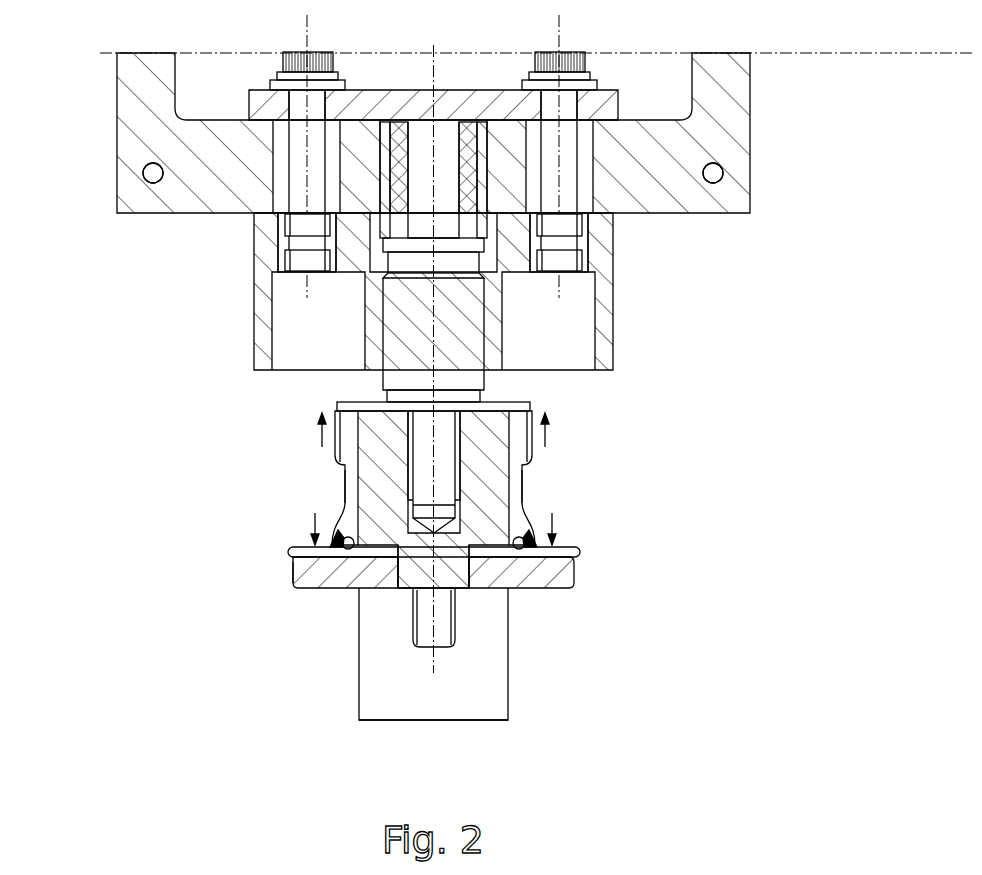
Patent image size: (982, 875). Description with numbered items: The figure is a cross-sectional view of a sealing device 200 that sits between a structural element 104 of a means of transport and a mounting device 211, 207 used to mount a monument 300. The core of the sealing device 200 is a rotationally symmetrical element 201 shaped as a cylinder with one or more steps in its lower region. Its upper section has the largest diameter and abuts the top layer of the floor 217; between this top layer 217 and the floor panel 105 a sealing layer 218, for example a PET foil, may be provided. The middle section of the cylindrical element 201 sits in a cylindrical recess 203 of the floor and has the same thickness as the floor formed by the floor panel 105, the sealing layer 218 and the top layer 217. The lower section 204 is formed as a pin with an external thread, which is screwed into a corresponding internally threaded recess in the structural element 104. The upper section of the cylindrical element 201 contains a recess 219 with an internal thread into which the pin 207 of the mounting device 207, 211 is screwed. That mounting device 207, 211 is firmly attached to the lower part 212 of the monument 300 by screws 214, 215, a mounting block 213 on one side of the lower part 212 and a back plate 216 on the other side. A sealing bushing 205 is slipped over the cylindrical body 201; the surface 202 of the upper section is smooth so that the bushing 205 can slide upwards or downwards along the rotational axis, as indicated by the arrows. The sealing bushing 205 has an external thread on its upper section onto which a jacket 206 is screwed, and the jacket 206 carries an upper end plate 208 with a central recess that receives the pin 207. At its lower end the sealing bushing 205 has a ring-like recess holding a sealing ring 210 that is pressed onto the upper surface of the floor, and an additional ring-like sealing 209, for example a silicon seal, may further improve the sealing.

The monument 300 is at (770, 130).
The lower part of the monument 212 is at (132, 195).
The mounting block 213 is at (253, 258).
The screw 214 is at (335, 77).
The screw 215 is at (584, 77).
The back plate 216 is at (460, 97).
The mounting device 211 is at (410, 317).
The upper end plate 208 is at (514, 403).
The pin of the mounting device 207 is at (434, 463).
The jacket 206 is at (336, 405).
The sealing bushing 205 is at (348, 440).
The sealing device 200 is at (272, 473).
The surface of the upper section of the cylindrical body 202 is at (355, 488).
The ring-like sealing 209 is at (533, 540).
The sealing ring 210 is at (542, 548).
The top layer of the floor 217 is at (288, 547).
The sealing layer 218 is at (297, 577).
The floor panel 105 is at (348, 580).
The recess with internal thread 219 is at (472, 562).
The cylindrical recess of the floor 203 is at (462, 577).
The lower section of the cylindrical element 204 is at (423, 627).
The rotationally symmetrical element 201 is at (465, 590).
The structural element 104 is at (493, 712).